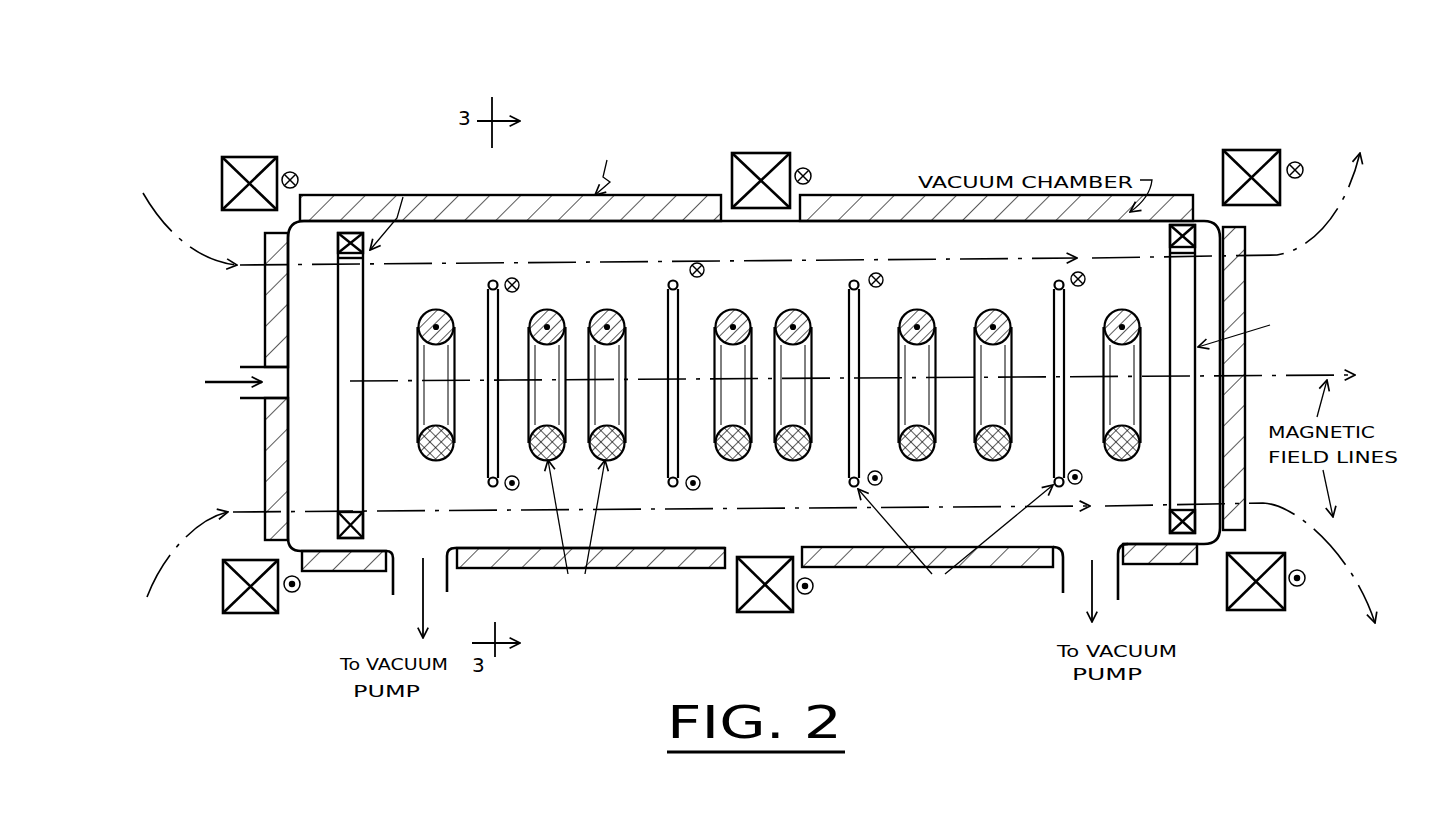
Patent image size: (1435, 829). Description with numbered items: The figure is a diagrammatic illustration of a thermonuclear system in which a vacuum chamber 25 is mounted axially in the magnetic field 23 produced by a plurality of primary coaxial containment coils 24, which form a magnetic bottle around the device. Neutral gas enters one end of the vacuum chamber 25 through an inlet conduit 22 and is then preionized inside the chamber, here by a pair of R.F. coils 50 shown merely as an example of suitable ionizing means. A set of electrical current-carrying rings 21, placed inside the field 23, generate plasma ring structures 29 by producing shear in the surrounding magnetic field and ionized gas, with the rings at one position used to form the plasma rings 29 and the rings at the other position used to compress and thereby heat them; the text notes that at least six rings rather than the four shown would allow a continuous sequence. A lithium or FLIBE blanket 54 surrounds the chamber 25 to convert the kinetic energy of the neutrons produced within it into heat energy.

The current-carrying rings 21 is at (488, 285).
The inlet conduit 22 is at (252, 367).
The magnetic field 23 is at (385, 268).
The primary coaxial containment coils 24 is at (263, 157).
The vacuum chamber 25 is at (853, 217).
The plasma ring structures 29 is at (612, 312).
The R.F. coils 50 is at (338, 300).
The FLIBE blanket 54 is at (660, 205).